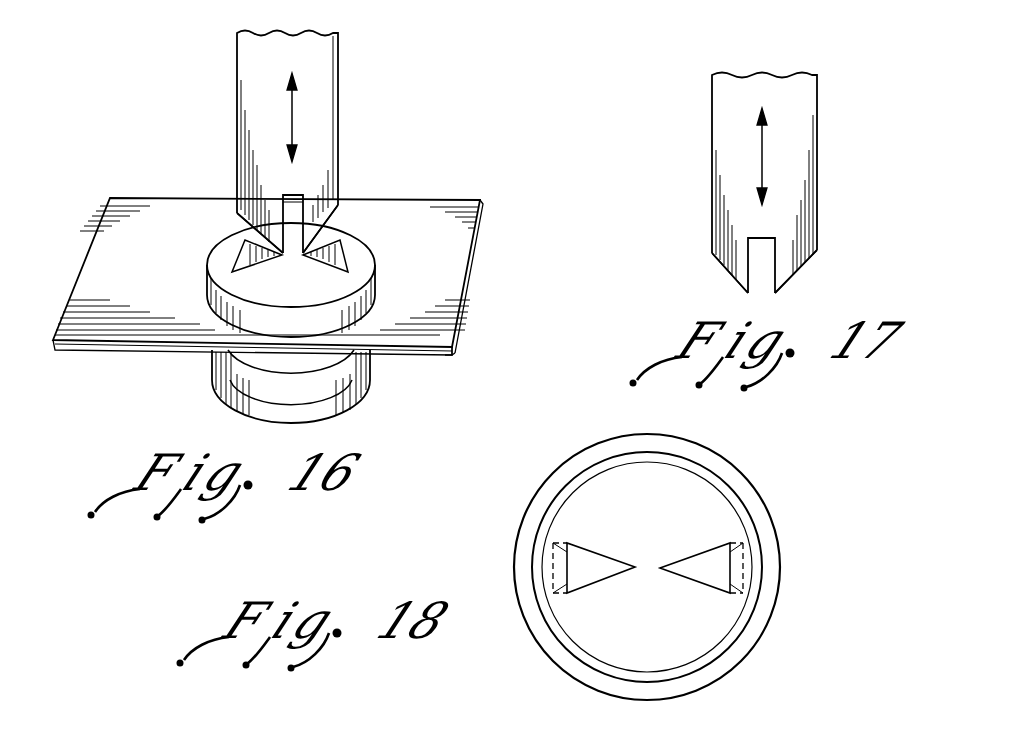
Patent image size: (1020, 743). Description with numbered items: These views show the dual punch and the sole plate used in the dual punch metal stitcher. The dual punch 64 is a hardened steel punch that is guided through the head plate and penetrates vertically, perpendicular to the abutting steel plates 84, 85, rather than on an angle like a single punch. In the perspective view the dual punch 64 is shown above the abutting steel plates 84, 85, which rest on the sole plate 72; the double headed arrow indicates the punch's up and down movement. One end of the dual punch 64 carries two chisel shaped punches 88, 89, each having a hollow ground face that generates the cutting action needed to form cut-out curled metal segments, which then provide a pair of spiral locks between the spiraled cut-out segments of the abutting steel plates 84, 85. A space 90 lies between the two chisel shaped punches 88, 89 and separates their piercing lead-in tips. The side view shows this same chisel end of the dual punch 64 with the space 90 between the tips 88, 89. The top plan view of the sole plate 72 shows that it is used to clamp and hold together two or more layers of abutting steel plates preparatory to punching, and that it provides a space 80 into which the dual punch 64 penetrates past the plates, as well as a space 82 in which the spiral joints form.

In FIG. 16, the dual punch 64 is at (318, 83).
In FIG. 17, the dual punch 64 is at (795, 122).
In FIG. 16, the sole plate 72 is at (240, 380).
In FIG. 18, the sole plate 72 is at (692, 495).
In FIG. 18, the space 80 is at (705, 572).
In FIG. 18, the space 82 is at (555, 549).
In FIG. 16, the abutting steel plate 84 is at (412, 269).
In FIG. 16, the abutting steel plate 85 is at (424, 352).
In FIG. 16, the chisel shaped punch 88 is at (243, 226).
In FIG. 17, the chisel shaped punch 88 is at (735, 275).
In FIG. 16, the chisel shaped punch 89 is at (345, 222).
In FIG. 17, the chisel shaped punch 89 is at (785, 275).
In FIG. 16, the space 90 is at (305, 197).
In FIG. 17, the space 90 is at (760, 253).